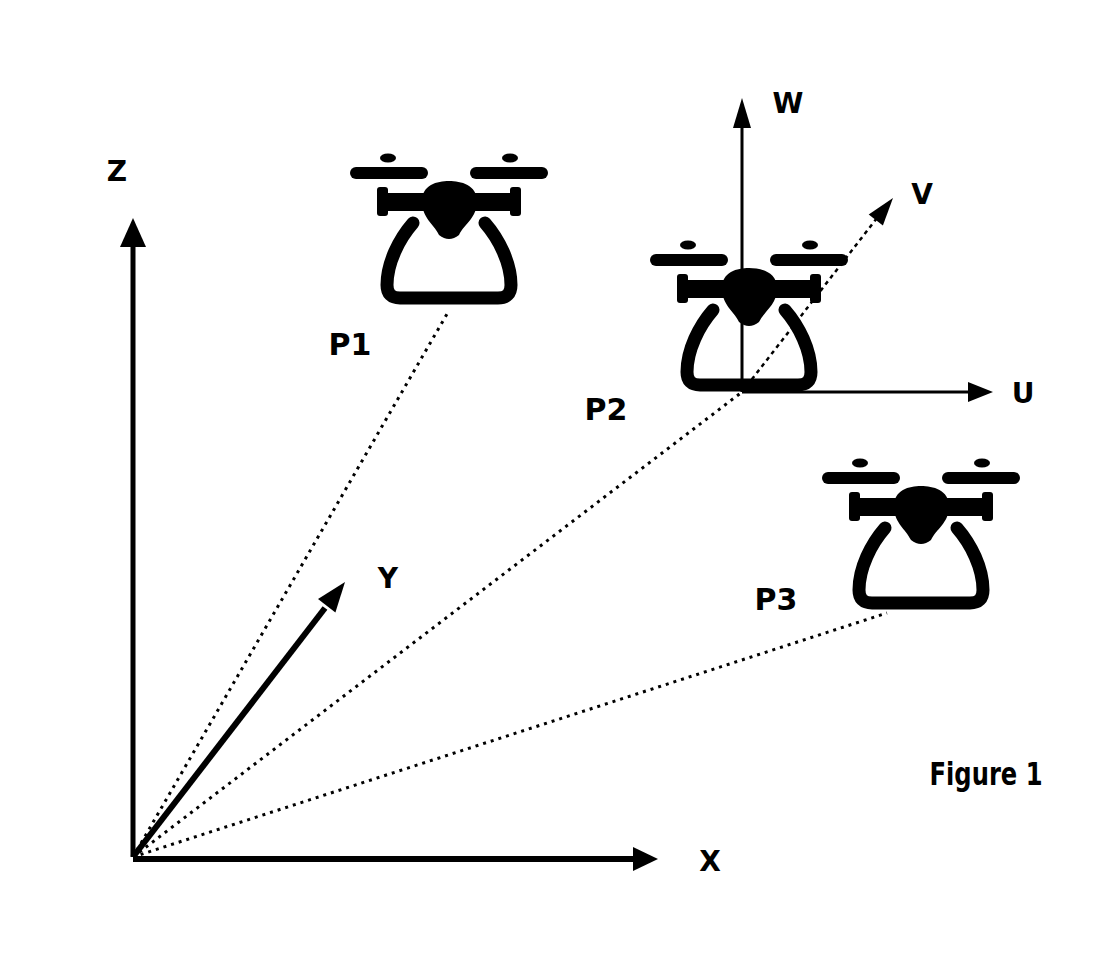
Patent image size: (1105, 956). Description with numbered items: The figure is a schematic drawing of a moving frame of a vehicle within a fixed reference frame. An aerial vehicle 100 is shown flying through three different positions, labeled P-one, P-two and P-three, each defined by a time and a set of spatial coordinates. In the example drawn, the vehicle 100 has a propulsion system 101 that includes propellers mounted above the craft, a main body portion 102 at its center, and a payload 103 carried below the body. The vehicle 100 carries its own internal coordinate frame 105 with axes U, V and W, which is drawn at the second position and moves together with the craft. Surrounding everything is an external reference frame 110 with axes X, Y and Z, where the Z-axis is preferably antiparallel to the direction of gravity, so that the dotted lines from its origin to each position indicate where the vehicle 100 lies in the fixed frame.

The aerial vehicle 100 is at (422, 182).
The propulsion system 101 is at (476, 156).
The main body portion 102 is at (430, 238).
The payload 103 is at (376, 285).
The internal coordinate frame 105 is at (853, 382).
The external reference frame 110 is at (484, 850).